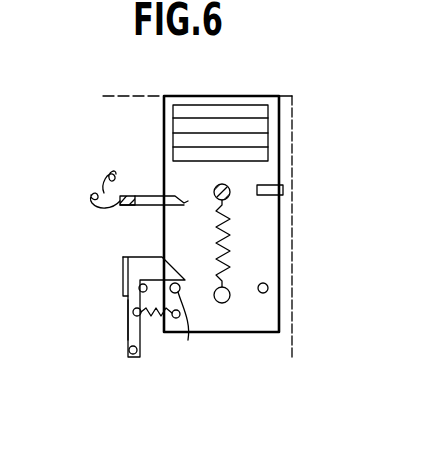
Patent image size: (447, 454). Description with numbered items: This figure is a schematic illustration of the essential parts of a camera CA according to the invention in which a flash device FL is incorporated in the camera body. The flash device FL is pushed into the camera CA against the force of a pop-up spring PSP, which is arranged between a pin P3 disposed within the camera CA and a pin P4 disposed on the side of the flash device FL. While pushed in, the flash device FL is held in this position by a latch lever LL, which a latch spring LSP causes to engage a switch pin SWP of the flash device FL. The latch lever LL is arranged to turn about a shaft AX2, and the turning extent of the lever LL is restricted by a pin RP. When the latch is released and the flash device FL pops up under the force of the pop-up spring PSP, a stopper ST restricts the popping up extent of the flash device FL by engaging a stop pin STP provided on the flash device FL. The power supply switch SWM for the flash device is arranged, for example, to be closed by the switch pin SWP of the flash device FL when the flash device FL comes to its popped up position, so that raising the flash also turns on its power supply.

The camera CA is at (132, 86).
The flash device FL is at (206, 108).
The power supply switch SWM is at (124, 195).
The pin P3 is at (215, 187).
The stopper ST is at (268, 184).
The pop-up spring PSP is at (230, 240).
The stop pin STP is at (268, 288).
The pin RP is at (147, 285).
The latch lever LL is at (128, 298).
The switch pin SWP is at (190, 326).
The pin P4 is at (223, 303).
The shaft AX2 is at (132, 356).
The latch spring LSP is at (149, 318).